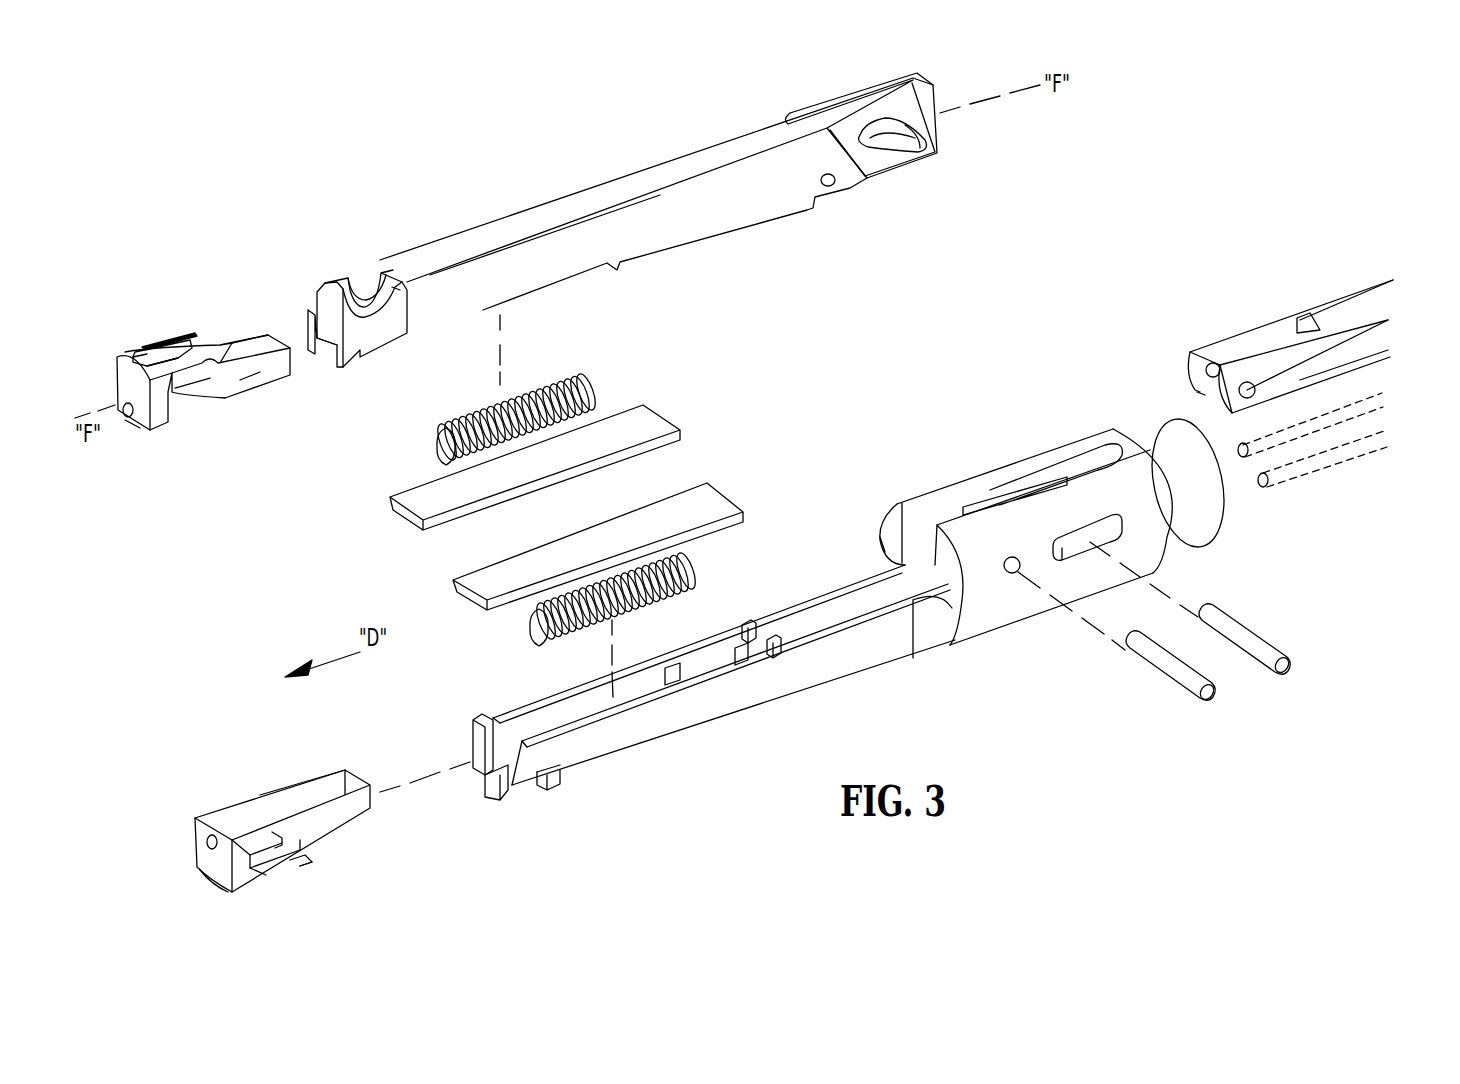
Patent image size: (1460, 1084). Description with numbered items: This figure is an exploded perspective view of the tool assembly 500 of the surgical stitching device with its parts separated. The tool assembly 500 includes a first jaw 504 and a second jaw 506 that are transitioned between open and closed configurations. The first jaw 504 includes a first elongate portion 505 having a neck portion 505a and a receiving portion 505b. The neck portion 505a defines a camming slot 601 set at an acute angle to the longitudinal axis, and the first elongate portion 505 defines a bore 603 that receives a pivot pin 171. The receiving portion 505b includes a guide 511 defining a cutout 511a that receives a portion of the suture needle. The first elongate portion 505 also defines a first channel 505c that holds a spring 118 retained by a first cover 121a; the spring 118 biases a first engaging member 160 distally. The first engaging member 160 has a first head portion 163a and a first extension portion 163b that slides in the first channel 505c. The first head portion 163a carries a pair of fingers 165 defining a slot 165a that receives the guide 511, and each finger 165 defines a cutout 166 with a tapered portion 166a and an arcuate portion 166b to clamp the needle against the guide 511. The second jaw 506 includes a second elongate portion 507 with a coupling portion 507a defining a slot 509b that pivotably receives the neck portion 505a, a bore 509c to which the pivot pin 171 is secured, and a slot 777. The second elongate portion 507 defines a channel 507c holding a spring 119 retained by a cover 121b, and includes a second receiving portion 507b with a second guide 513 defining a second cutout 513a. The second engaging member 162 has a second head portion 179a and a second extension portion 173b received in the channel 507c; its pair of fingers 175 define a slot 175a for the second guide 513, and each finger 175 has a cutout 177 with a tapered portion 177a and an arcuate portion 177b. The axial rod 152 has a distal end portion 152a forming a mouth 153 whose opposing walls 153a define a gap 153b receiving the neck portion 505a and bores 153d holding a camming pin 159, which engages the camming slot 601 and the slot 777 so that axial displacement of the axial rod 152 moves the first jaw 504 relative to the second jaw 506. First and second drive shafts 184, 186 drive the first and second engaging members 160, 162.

The tool assembly 500 is at (1066, 213).
The first jaw 504 is at (651, 165).
The first elongate portion 505 is at (685, 235).
The neck portion 505a is at (890, 158).
The receiving portion 505b is at (390, 306).
The first channel 505c is at (325, 342).
The camming slot 601 is at (920, 140).
The bore 603 is at (828, 187).
The guide 511 is at (322, 290).
The cutout 511a is at (365, 292).
The first engaging member 160 is at (232, 340).
The fingers 165 is at (140, 348).
The slot 165a is at (194, 325).
The cutout 166 is at (178, 340).
The tapered portion 166a is at (222, 357).
The arcuate portion 166b is at (215, 360).
The first head portion 163a is at (137, 418).
The first extension portion 163b is at (248, 375).
The spring 118 is at (583, 384).
The spring 119 is at (690, 570).
The first cover 121a is at (650, 415).
The cover 121b is at (712, 490).
The second elongate portion 507 is at (790, 700).
The coupling portion 507a is at (1103, 443).
The second receiving portion 507b is at (552, 782).
The channel 507c is at (487, 735).
The second guide 513 is at (503, 792).
The second cutout 513a is at (538, 792).
The second jaw 506 is at (950, 645).
The slot 509b is at (933, 515).
The bore 509c is at (1013, 572).
The slot 777 is at (1095, 540).
The camming pin 159 is at (1265, 647).
The pivot pin 171 is at (1192, 700).
The axial rod 152 is at (1352, 290).
The distal end portion 152a is at (1305, 322).
The mouth 153 is at (1248, 343).
The opposing walls 153a is at (1207, 365).
The gap 153b is at (1210, 395).
The bores 153d is at (1320, 367).
The first drive shaft 184 is at (1272, 445).
The second drive shaft 186 is at (1345, 455).
The second engaging member 162 is at (203, 820).
The second extension portion 173b is at (313, 793).
The fingers 175 is at (266, 875).
The slot 175a is at (282, 843).
The cutout 177 is at (297, 867).
The tapered portion 177a is at (300, 860).
The arcuate portion 177b is at (275, 835).
The second head portion 179a is at (227, 885).